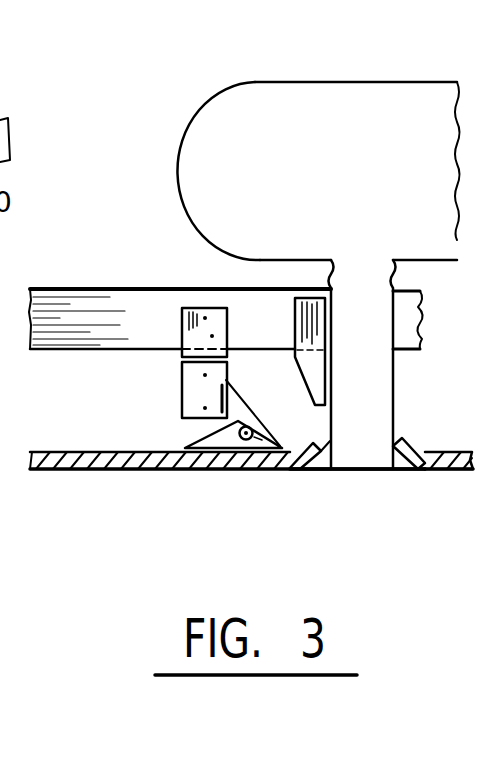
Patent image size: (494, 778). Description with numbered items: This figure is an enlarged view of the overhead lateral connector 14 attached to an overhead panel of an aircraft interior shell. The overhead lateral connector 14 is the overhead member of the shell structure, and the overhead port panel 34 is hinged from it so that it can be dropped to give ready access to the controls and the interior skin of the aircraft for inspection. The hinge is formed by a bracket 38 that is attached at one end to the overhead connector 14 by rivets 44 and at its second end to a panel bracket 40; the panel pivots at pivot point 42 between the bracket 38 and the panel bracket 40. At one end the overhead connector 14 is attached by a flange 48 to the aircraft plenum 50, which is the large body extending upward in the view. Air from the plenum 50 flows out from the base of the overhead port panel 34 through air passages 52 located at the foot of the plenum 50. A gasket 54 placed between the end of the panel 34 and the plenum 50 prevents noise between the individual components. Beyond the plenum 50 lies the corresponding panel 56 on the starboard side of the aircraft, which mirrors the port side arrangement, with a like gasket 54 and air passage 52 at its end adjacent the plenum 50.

The overhead lateral connector 14 is at (110, 289).
The overhead port panel 34 is at (62, 472).
The bracket 38 is at (182, 372).
The panel bracket 40 is at (190, 446).
The pivot point 42 is at (250, 455).
The rivets 44 is at (205, 318).
The flange 48 is at (307, 366).
The aircraft plenum 50 is at (358, 317).
The air passages 52 is at (292, 472).
The gasket 54 is at (318, 438).
The starboard side panel 56 is at (458, 475).